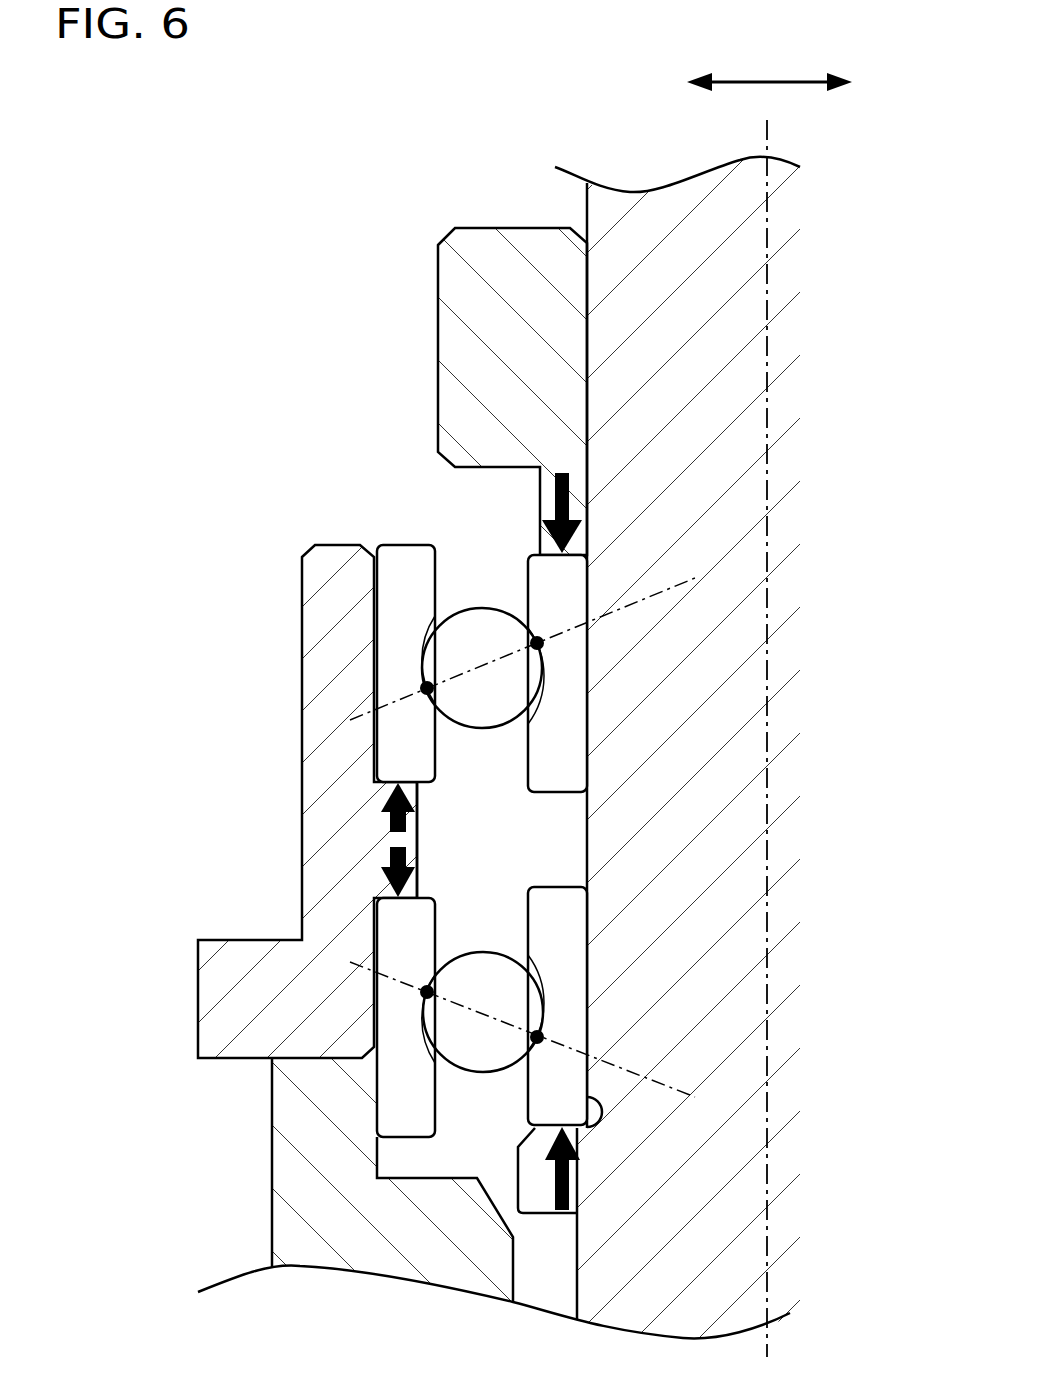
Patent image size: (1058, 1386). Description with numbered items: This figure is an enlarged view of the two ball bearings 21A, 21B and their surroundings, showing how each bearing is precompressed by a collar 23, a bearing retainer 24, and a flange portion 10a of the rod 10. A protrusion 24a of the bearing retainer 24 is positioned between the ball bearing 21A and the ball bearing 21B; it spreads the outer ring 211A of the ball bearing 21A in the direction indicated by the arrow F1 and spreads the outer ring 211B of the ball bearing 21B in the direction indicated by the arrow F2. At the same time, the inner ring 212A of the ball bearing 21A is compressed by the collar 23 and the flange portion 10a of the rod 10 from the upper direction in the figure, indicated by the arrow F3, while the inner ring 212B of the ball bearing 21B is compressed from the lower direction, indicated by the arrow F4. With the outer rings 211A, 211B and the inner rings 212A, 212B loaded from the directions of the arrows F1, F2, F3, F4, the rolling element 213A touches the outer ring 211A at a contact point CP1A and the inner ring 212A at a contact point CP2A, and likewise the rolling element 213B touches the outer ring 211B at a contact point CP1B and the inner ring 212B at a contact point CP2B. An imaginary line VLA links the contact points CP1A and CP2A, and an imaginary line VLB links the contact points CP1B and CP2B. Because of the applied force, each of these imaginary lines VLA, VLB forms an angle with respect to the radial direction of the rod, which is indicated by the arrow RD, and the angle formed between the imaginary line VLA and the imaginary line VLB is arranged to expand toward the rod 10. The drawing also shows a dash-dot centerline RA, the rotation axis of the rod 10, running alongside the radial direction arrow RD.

The rod 10 is at (628, 235).
The flange portion 10a is at (507, 1223).
The collar 23 is at (455, 273).
The bearing retainer 24 is at (534, 801).
The protrusion 24a is at (417, 840).
The ball bearing 21A is at (546, 585).
The ball bearing 21B is at (526, 1044).
The outer ring 211A is at (317, 663).
The outer ring 211B is at (297, 1028).
The inner ring 212A is at (573, 663).
The inner ring 212B is at (573, 982).
The rolling element 213A is at (423, 662).
The rolling element 213B is at (430, 1053).
The contact point CP1A is at (427, 688).
The contact point CP2A is at (537, 643).
The contact point CP1B is at (427, 992).
The contact point CP2B is at (537, 1037).
The imaginary line VLA is at (662, 593).
The imaginary line VLB is at (682, 1095).
The arrow F1 is at (385, 808).
The arrow F2 is at (385, 860).
The arrow F3 is at (556, 499).
The arrow F4 is at (573, 1178).
The arrow RD is at (769, 70).
The rotation axis RA is at (767, 122).